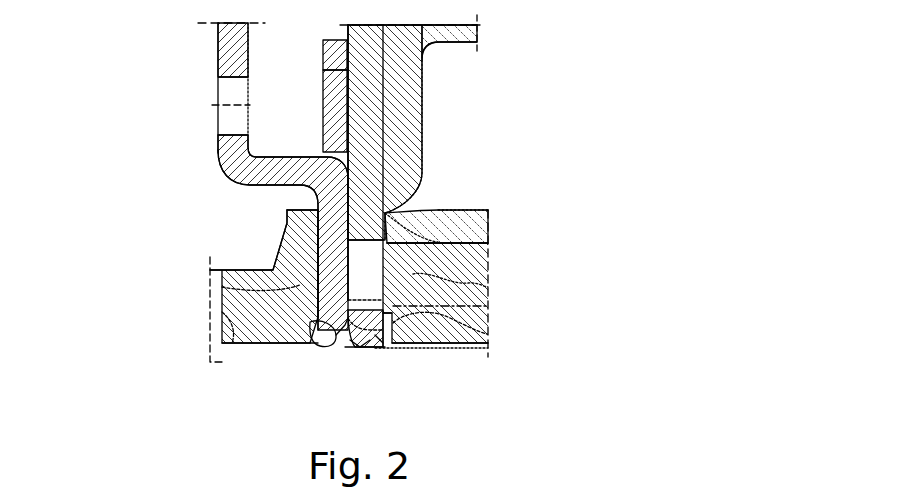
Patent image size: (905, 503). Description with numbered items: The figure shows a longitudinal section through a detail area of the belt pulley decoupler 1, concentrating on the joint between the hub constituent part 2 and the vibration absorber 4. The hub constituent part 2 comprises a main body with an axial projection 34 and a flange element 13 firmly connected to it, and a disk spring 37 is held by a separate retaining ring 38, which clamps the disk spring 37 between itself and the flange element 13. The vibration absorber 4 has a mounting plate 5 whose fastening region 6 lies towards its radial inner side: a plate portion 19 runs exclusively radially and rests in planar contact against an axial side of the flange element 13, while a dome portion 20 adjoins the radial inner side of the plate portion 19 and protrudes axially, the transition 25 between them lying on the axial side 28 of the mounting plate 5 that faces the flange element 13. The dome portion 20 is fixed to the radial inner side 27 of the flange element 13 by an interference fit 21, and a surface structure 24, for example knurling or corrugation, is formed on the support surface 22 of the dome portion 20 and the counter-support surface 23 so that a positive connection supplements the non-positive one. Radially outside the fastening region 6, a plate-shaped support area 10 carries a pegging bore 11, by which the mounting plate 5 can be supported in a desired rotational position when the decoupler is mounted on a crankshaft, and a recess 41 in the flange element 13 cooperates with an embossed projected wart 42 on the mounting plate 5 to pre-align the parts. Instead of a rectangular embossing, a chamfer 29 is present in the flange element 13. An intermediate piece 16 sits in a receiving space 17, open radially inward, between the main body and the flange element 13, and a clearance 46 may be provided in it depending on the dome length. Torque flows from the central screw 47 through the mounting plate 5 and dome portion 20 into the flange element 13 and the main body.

The belt pulley decoupler 1 is at (103, 87).
The hub constituent part 2 is at (421, 125).
The vibration absorber 4 is at (235, 160).
The mounting plate 5 is at (283, 232).
The fastening region 6 is at (287, 213).
The support area 10 is at (250, 53).
The pegging bore 11 is at (236, 130).
The flange element 13 is at (378, 217).
The intermediate piece 16 is at (488, 263).
The receiving space 17 is at (489, 241).
The plate portion 19 is at (312, 288).
The dome portion 20 is at (366, 348).
The interference fit 21 is at (424, 346).
The support surface 22 is at (488, 309).
The counter-support surface 23 is at (360, 349).
The surface structure 24 is at (394, 337).
The transition 25 is at (312, 345).
The radial inner side 27 is at (360, 343).
The axial side 28 is at (488, 287).
The chamfer 29 is at (345, 338).
The axial projection 34 is at (481, 28).
The disk spring 37 is at (333, 84).
The retaining ring 38 is at (330, 58).
The recess 41 is at (385, 213).
The projected wart 42 is at (281, 251).
The clearance 46 is at (488, 341).
The central screw 47 is at (252, 327).